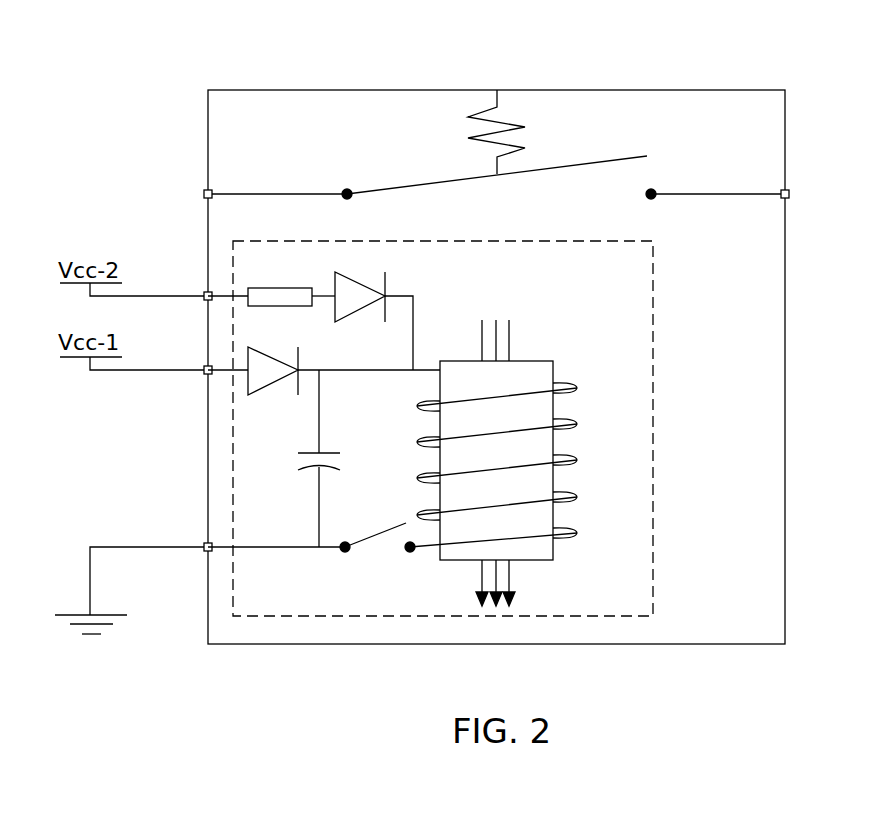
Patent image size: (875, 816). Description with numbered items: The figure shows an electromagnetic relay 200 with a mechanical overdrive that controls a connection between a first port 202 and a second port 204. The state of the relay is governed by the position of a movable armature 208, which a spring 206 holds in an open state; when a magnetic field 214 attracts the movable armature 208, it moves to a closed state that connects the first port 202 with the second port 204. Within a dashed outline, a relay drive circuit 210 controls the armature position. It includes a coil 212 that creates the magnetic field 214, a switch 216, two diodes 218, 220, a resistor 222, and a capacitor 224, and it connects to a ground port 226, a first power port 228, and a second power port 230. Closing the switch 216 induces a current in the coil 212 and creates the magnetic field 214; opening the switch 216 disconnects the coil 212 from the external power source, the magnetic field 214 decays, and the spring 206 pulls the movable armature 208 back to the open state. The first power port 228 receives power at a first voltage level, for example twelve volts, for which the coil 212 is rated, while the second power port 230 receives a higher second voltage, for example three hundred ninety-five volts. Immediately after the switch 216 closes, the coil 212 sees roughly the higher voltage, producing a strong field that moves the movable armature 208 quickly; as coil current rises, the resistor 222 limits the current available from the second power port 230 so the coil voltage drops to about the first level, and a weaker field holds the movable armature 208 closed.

The electromagnetic relay 200 is at (785, 90).
The first port 202 is at (205, 191).
The second port 204 is at (789, 191).
The spring 206 is at (525, 148).
The movable armature 208 is at (620, 158).
The relay drive circuit 210 is at (653, 271).
The coil 212 is at (577, 388).
The magnetic field 214 is at (509, 350).
The switch 216 is at (349, 551).
The diode 218 is at (255, 395).
The diode 220 is at (385, 286).
The resistor 222 is at (270, 288).
The capacitor 224 is at (330, 453).
The ground port 226 is at (204, 549).
The first power port 228 is at (204, 372).
The second power port 230 is at (204, 298).